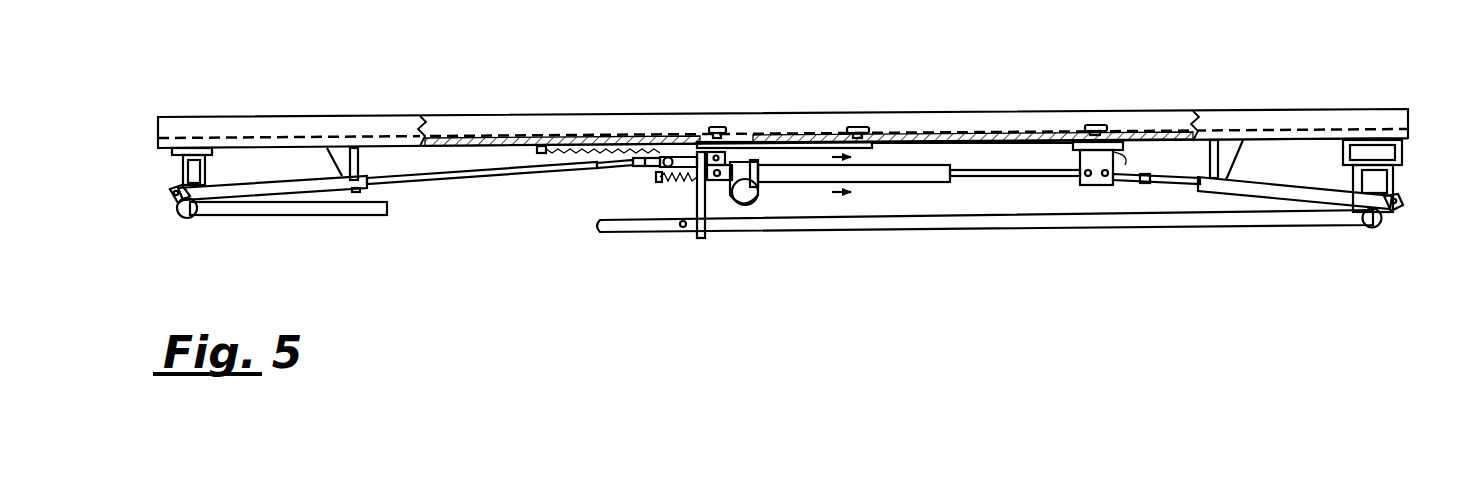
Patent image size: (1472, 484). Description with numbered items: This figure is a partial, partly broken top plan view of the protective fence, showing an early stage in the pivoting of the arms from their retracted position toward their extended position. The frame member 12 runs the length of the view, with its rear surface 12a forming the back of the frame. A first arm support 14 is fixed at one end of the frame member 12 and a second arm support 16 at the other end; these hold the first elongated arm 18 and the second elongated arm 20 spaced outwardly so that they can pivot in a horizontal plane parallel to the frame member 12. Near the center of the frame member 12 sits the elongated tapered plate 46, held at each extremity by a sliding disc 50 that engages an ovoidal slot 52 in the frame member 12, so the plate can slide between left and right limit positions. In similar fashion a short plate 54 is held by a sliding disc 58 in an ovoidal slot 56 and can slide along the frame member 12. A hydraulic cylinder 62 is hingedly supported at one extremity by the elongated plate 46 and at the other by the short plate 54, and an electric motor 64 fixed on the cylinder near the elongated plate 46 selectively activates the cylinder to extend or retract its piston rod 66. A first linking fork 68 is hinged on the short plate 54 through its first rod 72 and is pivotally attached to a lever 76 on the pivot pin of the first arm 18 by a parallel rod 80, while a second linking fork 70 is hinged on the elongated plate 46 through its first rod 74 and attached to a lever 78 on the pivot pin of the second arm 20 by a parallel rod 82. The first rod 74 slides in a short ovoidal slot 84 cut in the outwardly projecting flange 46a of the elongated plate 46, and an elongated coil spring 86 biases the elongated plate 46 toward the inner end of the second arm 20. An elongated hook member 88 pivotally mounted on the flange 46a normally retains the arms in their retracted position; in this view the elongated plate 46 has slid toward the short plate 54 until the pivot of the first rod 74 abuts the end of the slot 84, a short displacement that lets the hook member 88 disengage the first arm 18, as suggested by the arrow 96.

The frame member 12 is at (336, 117).
The rear surface of frame member 12a is at (1182, 129).
The first arm support 14 is at (1404, 152).
The second arm support 16 is at (183, 166).
The first elongated arm 18 is at (1036, 229).
The second elongated arm 20 is at (246, 211).
The elongated tapered plate 46 is at (822, 142).
The flange of elongated plate 46a is at (688, 156).
The sliding disc 50 is at (718, 127).
The ovoidal slot 52 is at (748, 137).
The short plate 54 is at (1128, 140).
The ovoidal slot 56 is at (1060, 142).
The sliding disc 58 is at (1095, 125).
The hydraulic cylinder 62 is at (890, 172).
The electric motor 64 is at (756, 192).
The piston rod 66 is at (1010, 176).
The first linking fork 68 is at (1256, 202).
The second linking fork 70 is at (428, 180).
The first rod of first linking fork 72 is at (1165, 181).
The first rod of second linking fork 74 is at (463, 174).
The lever 76 is at (1398, 207).
The lever 78 is at (173, 201).
The parallel rod 80 is at (1328, 198).
The parallel rod 82 is at (292, 187).
The short ovoidal slot 84 is at (680, 176).
The elongated coil spring 86 is at (548, 145).
The elongated hook member 88 is at (706, 205).
The arrow 96 is at (697, 249).